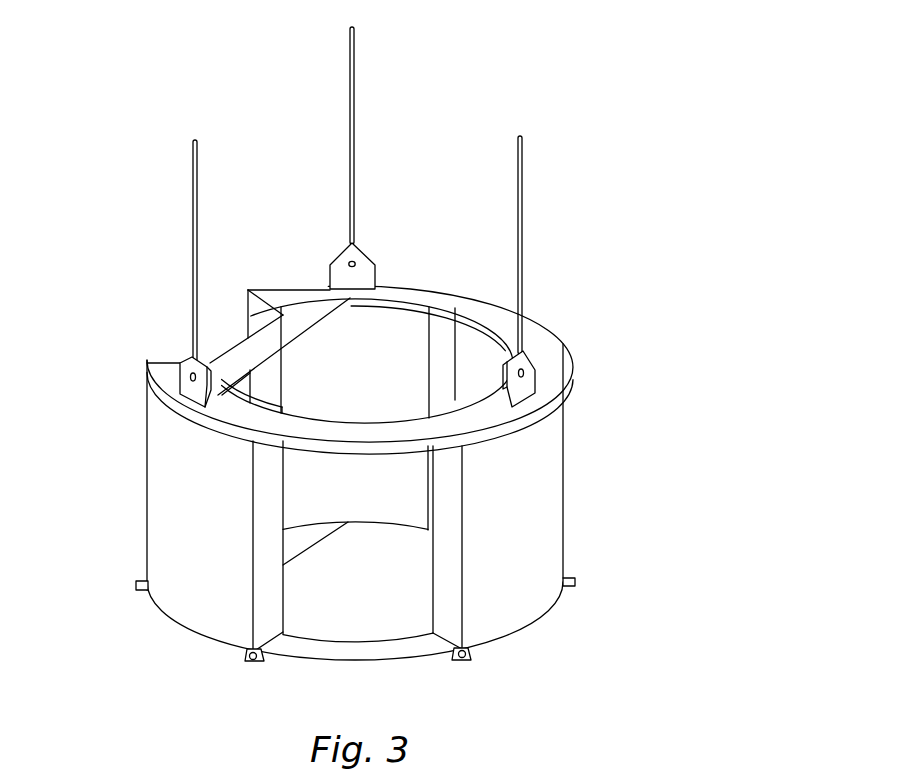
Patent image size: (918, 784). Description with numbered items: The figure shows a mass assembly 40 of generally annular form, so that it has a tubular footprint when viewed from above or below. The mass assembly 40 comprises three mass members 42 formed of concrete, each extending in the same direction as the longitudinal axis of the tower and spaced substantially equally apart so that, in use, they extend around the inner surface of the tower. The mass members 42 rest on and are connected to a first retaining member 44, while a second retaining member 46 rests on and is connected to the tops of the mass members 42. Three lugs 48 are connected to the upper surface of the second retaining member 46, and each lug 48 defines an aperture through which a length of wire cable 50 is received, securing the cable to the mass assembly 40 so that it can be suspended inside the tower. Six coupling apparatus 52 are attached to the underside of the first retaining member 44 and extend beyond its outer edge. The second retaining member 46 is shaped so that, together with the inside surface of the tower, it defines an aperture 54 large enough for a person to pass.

The mass assembly 40 is at (594, 244).
The mass members 42 is at (400, 338).
The first retaining member 44 is at (335, 652).
The second retaining member 46 is at (540, 340).
The lugs 48 is at (363, 260).
The wire cable 50 is at (355, 42).
The coupling apparatus 52 is at (137, 582).
The aperture 54 is at (238, 329).